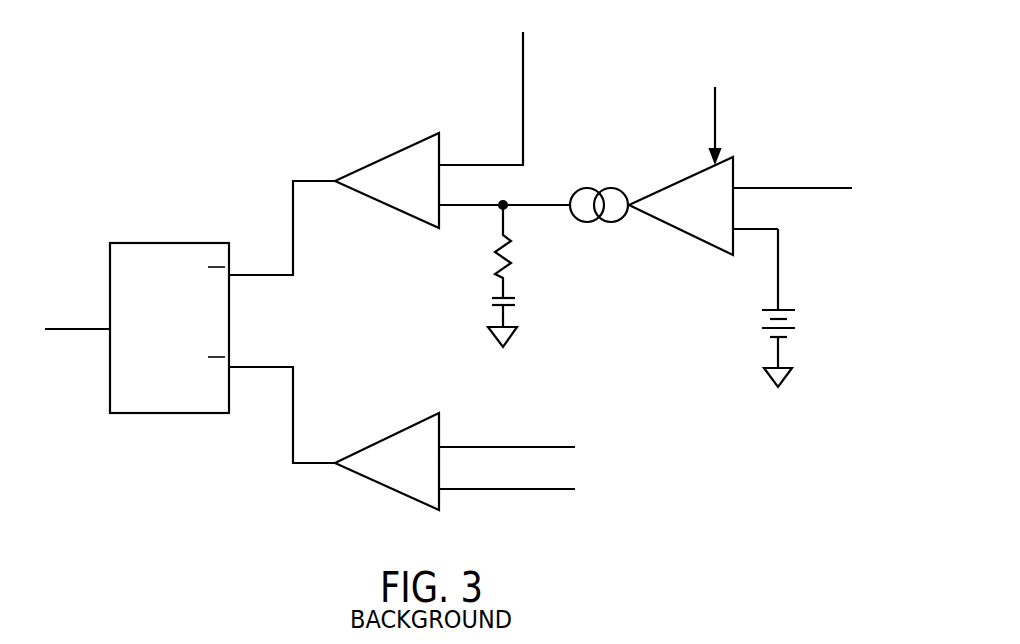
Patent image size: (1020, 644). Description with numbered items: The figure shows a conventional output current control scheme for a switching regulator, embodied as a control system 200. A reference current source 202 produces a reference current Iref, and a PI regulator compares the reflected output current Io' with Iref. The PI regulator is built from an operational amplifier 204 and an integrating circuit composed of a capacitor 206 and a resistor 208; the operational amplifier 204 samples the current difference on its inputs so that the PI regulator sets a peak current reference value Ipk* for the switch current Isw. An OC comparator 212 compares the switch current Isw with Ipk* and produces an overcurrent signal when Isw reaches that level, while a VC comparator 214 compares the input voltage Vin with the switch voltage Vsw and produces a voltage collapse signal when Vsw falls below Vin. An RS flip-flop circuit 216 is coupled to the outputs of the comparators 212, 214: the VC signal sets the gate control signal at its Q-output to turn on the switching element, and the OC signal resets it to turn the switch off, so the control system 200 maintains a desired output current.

The control system 200 is at (195, 88).
The reference current source 202 is at (805, 322).
The operational amplifier 204 is at (678, 230).
The capacitor 206 is at (523, 299).
The resistor 208 is at (486, 257).
The OC comparator 212 is at (368, 198).
The VC comparator 214 is at (381, 487).
The RS flip-flop circuit 216 is at (170, 413).